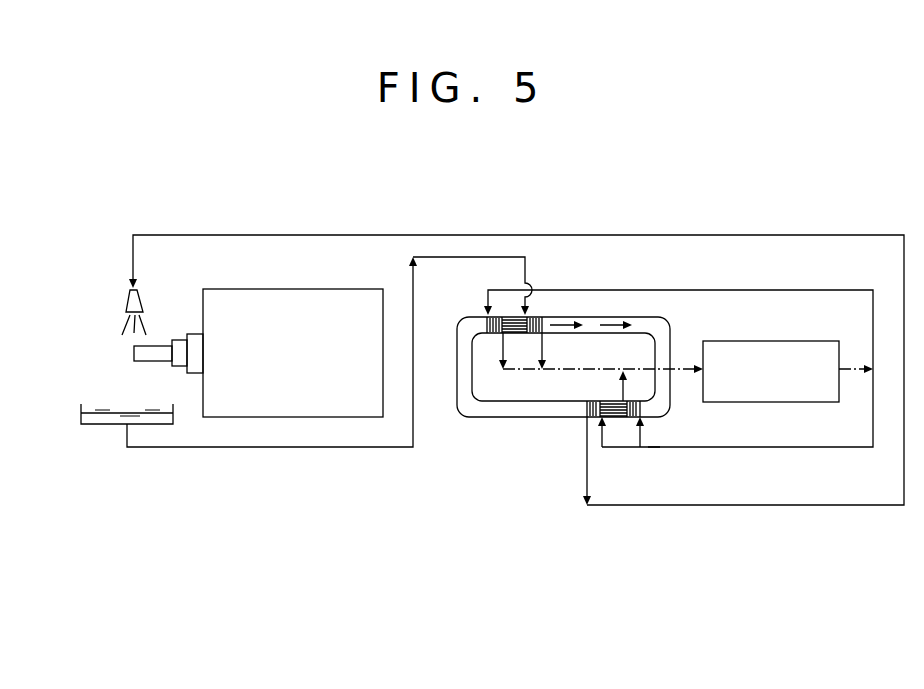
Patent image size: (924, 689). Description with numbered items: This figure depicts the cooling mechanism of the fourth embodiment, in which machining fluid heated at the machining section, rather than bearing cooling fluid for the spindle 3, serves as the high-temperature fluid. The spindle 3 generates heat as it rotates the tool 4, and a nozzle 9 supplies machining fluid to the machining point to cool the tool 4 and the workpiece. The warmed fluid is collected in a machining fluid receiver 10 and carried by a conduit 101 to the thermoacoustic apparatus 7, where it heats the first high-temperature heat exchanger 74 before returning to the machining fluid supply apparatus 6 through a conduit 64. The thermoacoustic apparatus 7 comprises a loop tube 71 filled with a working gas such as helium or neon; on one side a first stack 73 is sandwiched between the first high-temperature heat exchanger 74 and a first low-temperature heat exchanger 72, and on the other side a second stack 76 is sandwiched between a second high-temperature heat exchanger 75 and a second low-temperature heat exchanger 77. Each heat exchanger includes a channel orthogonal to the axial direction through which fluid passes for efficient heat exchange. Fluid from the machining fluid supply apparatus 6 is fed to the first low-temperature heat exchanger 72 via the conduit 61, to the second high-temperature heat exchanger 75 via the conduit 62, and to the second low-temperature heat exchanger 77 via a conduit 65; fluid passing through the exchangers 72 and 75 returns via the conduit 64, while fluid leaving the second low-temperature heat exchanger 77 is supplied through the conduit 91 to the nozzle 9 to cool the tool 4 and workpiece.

The conduit 91 is at (386, 234).
The spindle 3 is at (262, 307).
The nozzle 9 is at (130, 306).
The tool 4 is at (152, 356).
The machining fluid receiver 10 is at (103, 416).
The conduit 101 is at (379, 449).
The conduit 61 is at (713, 287).
The thermoacoustic apparatus 7 is at (644, 384).
The loop tube 71 is at (515, 410).
The first low-temperature heat exchanger 72 is at (494, 326).
The first stack 73 is at (513, 327).
The first high-temperature heat exchanger 74 is at (543, 325).
The second low-temperature heat exchanger 77 is at (602, 410).
The second stack 76 is at (613, 413).
The second high-temperature heat exchanger 75 is at (637, 411).
The conduit 64 is at (580, 370).
The conduit 65 is at (605, 429).
The conduit 62 is at (643, 432).
The machining fluid supply apparatus 6 is at (830, 347).